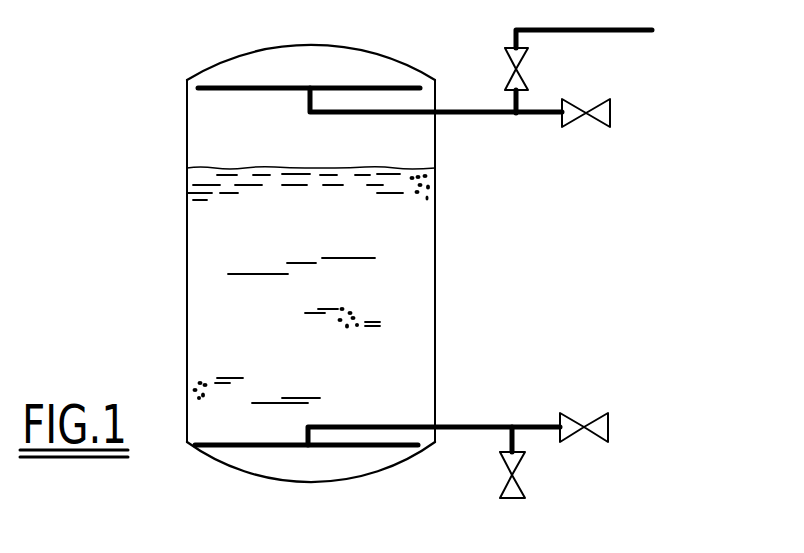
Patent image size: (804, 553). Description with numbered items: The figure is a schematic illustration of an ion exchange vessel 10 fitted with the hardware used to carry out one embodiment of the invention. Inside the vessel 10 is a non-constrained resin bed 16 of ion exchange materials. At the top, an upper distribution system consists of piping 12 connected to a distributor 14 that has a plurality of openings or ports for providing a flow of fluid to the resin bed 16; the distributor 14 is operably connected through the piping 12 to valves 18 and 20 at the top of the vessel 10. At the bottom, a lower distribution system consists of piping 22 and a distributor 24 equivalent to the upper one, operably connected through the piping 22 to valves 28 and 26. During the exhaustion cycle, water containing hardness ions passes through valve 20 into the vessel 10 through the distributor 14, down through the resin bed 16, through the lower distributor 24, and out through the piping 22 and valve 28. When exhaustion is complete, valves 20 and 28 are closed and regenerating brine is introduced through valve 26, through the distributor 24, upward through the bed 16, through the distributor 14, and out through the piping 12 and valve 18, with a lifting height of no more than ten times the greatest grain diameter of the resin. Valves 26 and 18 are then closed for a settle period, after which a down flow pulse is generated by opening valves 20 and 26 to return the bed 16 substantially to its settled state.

The ion exchange vessel 10 is at (187, 300).
The piping 12 is at (475, 118).
The distributor 14 is at (205, 92).
The resin bed 16 is at (413, 296).
The valve 18 is at (528, 58).
The valve 20 is at (610, 113).
The piping 22 is at (464, 427).
The distributor 24 is at (398, 447).
The valve 26 is at (525, 462).
The valve 28 is at (608, 421).